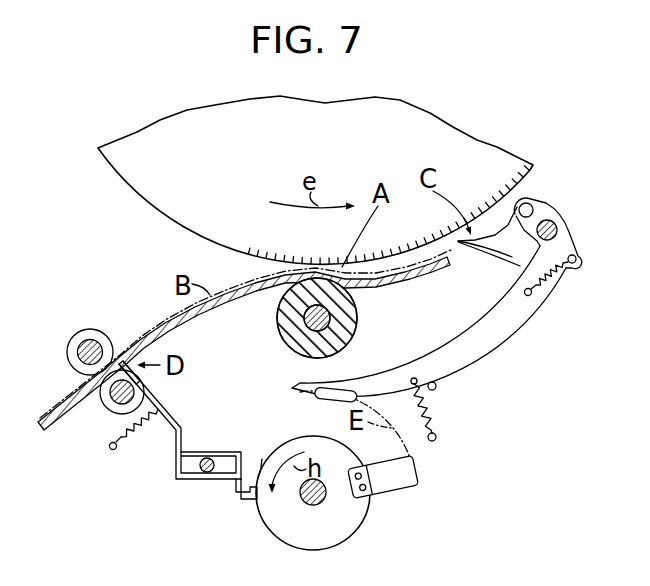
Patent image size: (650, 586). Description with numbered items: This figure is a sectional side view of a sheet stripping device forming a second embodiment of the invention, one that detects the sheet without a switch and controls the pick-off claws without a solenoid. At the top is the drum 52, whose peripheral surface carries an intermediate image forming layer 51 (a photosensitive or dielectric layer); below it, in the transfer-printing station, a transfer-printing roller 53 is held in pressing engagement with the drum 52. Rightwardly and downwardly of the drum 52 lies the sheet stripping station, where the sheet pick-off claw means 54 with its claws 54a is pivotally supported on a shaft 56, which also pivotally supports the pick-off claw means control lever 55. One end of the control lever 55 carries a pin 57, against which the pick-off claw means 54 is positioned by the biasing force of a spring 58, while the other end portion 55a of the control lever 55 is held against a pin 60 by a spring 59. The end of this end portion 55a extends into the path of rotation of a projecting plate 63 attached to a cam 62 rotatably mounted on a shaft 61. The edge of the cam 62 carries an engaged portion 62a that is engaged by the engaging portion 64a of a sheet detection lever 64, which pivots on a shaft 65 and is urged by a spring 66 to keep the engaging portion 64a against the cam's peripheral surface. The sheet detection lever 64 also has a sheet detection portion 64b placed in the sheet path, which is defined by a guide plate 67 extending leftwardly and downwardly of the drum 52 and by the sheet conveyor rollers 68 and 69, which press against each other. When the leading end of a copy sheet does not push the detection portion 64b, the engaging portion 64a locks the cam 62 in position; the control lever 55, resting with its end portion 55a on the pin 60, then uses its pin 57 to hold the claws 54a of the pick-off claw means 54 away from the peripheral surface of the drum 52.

The intermediate image forming layer 51 is at (204, 238).
The drum 52 is at (213, 205).
The transfer-printing roller 53 is at (293, 351).
The sheet pick-off claw means 54 is at (521, 197).
The claws 54a is at (462, 246).
The pick-off claw means control lever 55 is at (497, 342).
The other end portion 55a is at (346, 387).
The shaft 56 is at (558, 232).
The pin 57 is at (535, 207).
The spring 58 is at (548, 292).
The spring 59 is at (433, 418).
The pin 60 is at (437, 388).
The shaft 61 is at (315, 505).
The cam 62 is at (363, 515).
The engaged portion 62a is at (257, 472).
The projecting plate 63 is at (399, 486).
The sheet detection lever 64 is at (176, 423).
The engaging portion 64a is at (244, 496).
The sheet detection portion 64b is at (122, 358).
The shaft 65 is at (213, 460).
The spring 66 is at (122, 441).
The guide plate 67 is at (251, 298).
The sheet conveyor roller 68 is at (87, 329).
The sheet conveyor roller 69 is at (106, 410).